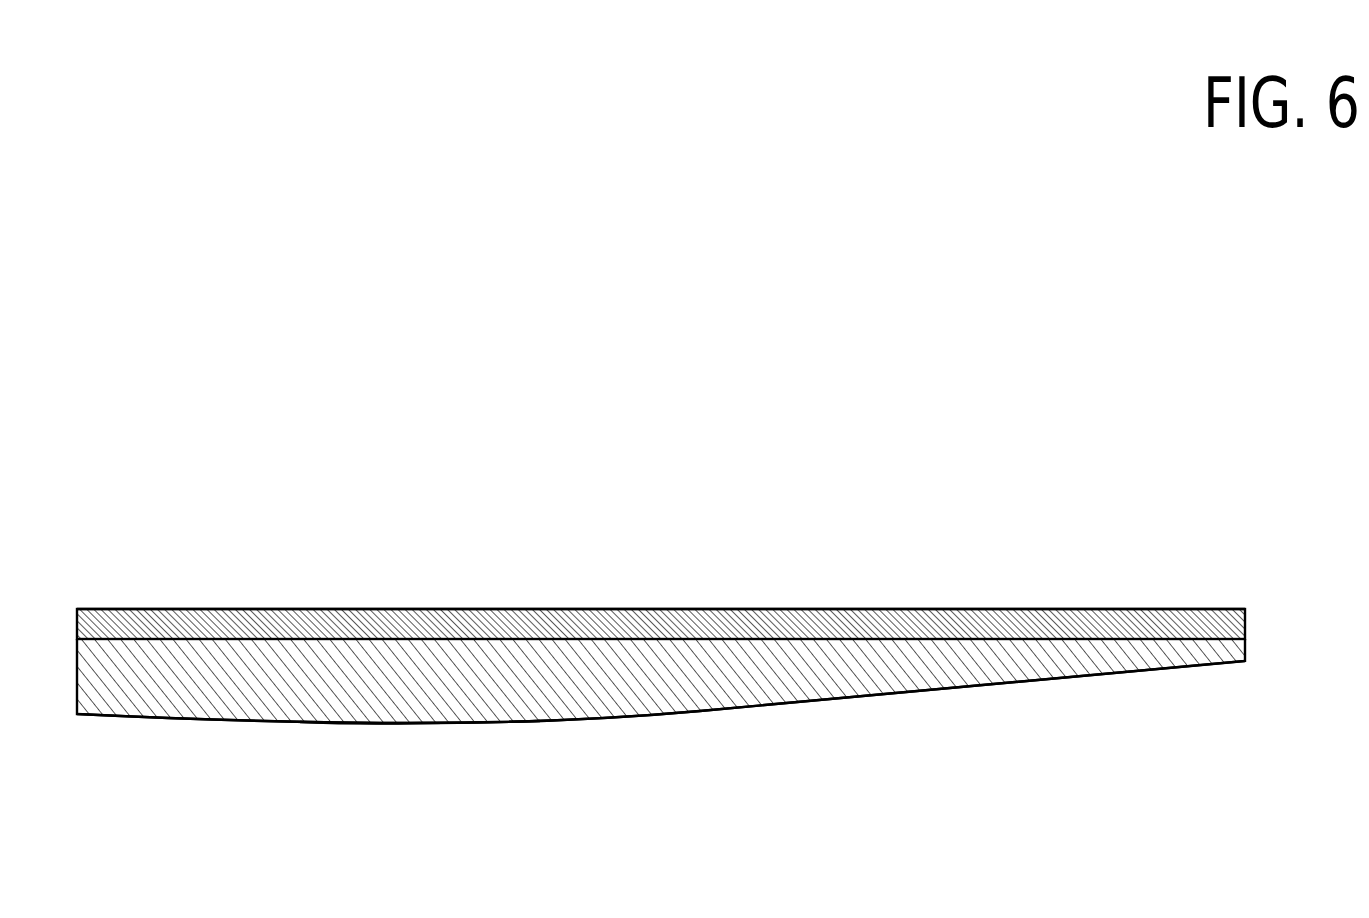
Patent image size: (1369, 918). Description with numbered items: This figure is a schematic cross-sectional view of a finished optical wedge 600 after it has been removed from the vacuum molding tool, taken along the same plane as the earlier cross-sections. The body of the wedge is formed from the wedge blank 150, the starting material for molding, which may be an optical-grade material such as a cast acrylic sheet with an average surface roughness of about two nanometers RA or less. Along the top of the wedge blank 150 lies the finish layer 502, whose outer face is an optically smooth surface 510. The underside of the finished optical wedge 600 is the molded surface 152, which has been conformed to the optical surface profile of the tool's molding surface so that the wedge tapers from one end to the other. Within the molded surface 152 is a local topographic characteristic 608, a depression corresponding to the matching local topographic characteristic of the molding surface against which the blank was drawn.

The finished optical wedge 600 is at (257, 476).
The finish layer 502 is at (413, 606).
The optically smooth surface 510 is at (686, 596).
The wedge blank 150 is at (887, 668).
The molded surface 152 is at (743, 722).
The local topographic characteristic 608 is at (405, 757).